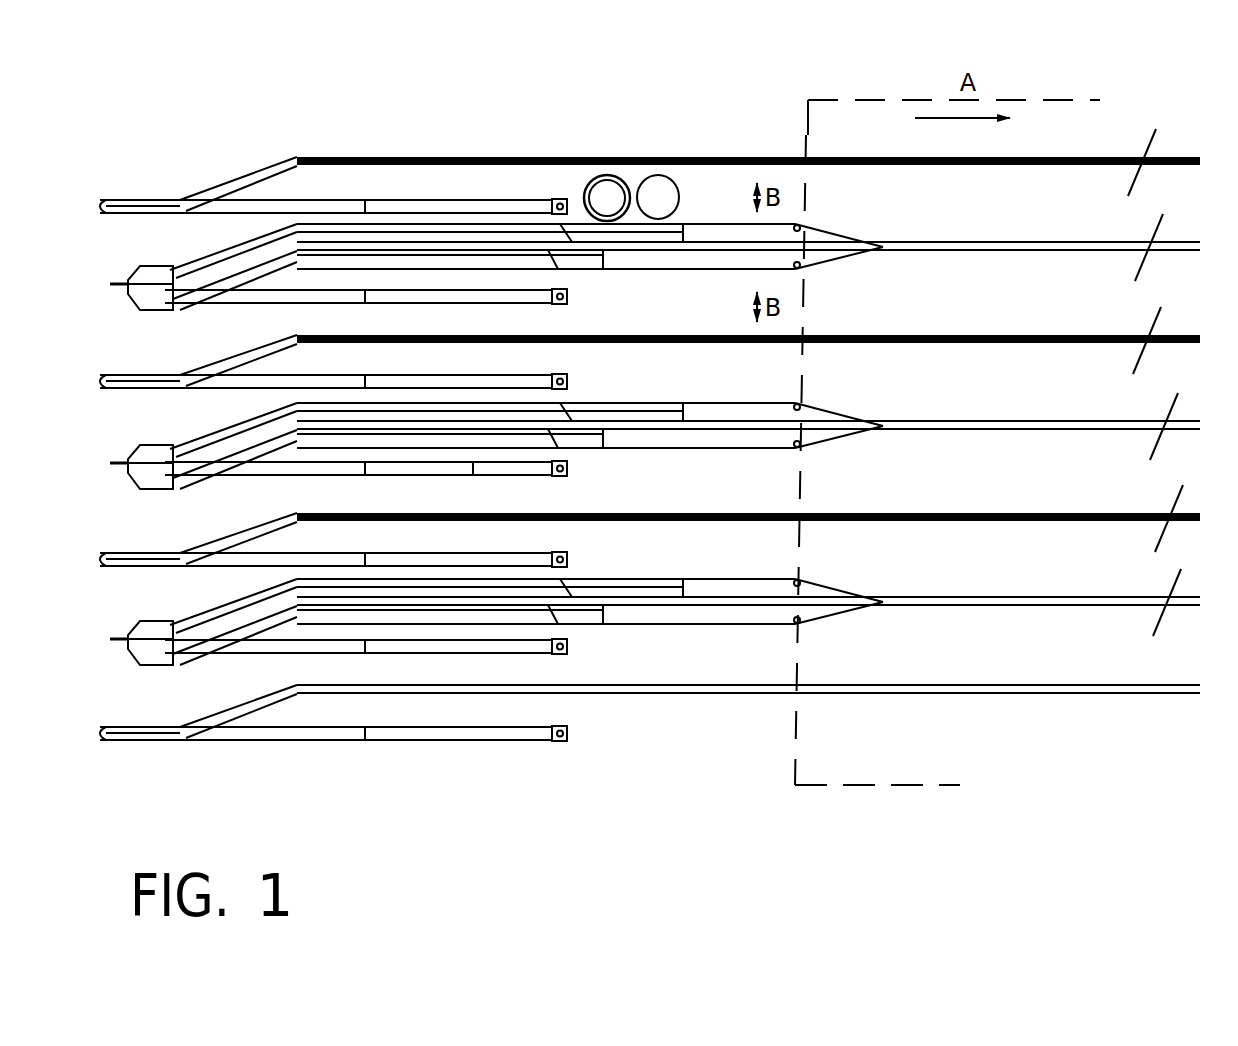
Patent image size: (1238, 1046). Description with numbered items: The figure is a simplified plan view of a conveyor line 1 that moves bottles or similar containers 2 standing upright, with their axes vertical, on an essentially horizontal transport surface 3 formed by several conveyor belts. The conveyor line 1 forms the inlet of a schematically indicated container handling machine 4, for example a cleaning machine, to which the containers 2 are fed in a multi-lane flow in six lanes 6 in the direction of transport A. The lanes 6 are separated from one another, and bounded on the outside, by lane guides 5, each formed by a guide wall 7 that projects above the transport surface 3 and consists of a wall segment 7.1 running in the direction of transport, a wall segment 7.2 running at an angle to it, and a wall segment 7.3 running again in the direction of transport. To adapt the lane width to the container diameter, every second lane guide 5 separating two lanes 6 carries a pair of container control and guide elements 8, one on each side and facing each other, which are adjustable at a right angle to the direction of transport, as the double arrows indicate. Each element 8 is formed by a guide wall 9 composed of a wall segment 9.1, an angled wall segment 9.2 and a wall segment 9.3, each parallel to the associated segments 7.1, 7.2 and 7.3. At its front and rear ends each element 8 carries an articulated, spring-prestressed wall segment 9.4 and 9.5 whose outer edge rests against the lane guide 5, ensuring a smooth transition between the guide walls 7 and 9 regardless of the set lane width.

The conveyor line 1 is at (737, 137).
The containers 2 is at (604, 175).
The transport surface 3 is at (963, 221).
The container handling machine 4 is at (788, 778).
The lane guides 5 is at (1027, 157).
The lanes 6 is at (1159, 363).
The guide walls 7 is at (887, 421).
The wall segment 7.1 is at (101, 384).
The wall segment 7.2 is at (247, 352).
The wall segment 7.3 is at (497, 420).
The container control and guide elements 8 is at (490, 224).
The guide walls 9 is at (604, 402).
The wall segment 9.1 is at (139, 490).
The wall segment 9.2 is at (243, 462).
The wall segment 9.3 is at (473, 462).
The wall segment 9.4 is at (127, 470).
The wall segment 9.5 is at (828, 437).